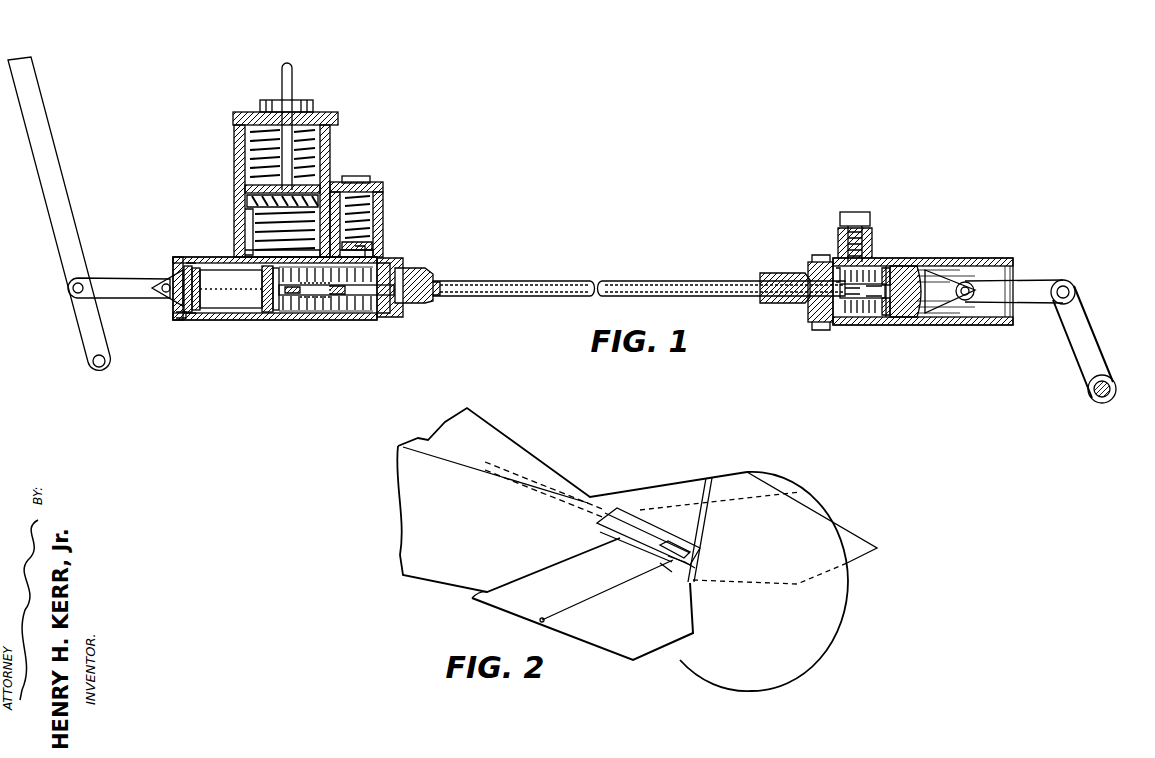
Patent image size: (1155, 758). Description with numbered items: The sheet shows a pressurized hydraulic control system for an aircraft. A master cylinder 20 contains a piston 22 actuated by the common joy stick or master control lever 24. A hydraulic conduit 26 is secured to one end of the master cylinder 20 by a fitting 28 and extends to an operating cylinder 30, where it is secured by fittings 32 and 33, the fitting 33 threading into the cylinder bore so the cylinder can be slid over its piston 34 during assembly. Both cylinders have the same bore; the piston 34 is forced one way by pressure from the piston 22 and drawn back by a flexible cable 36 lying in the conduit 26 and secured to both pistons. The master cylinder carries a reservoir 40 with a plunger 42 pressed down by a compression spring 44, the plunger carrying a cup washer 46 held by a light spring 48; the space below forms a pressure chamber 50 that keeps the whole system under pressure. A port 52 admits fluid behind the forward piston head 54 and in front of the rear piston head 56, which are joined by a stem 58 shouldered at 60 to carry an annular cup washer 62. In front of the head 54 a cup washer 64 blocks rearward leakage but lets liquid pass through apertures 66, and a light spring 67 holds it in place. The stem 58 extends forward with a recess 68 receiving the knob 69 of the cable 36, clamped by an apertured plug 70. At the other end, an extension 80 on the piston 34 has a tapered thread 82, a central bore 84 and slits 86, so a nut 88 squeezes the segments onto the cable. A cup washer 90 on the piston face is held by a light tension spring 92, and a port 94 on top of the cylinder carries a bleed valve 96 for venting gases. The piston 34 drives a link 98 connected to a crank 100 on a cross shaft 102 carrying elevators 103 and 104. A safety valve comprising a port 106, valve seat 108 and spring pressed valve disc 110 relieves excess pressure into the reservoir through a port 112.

In FIG. 1, the master cylinder 20 is at (370, 318).
In FIG. 1, the piston 22 is at (230, 322).
In FIG. 1, the master control lever 24 is at (58, 226).
In FIG. 1, the hydraulic conduit 26 is at (630, 283).
In FIG. 2, the hydraulic conduit 26 is at (547, 497).
In FIG. 1, the fitting 28 is at (410, 270).
In FIG. 1, the operating cylinder 30 is at (945, 258).
In FIG. 2, the operating cylinder 30 is at (600, 535).
In FIG. 1, the fitting 32 is at (808, 273).
In FIG. 1, the fitting 33 is at (817, 318).
In FIG. 1, the piston 34 is at (907, 268).
In FIG. 1, the flexible cable 36 is at (560, 283).
In FIG. 1, the reservoir 40 is at (247, 178).
In FIG. 1, the plunger 42 is at (243, 195).
In FIG. 1, the compression spring 44 is at (245, 160).
In FIG. 1, the cup washer 46 is at (245, 213).
In FIG. 1, the light spring 48 is at (246, 240).
In FIG. 1, the pressure chamber 50 is at (250, 228).
In FIG. 1, the port 52 is at (246, 250).
In FIG. 1, the forward piston head 54 is at (270, 320).
In FIG. 1, the rear piston head 56 is at (182, 322).
In FIG. 1, the stem 58 is at (228, 292).
In FIG. 1, the shoulder 60 is at (210, 294).
In FIG. 1, the annular cup washer 62 is at (195, 320).
In FIG. 1, the cup washer 64 is at (277, 318).
In FIG. 1, the apertures 66 is at (257, 320).
In FIG. 1, the light spring 67 is at (363, 318).
In FIG. 1, the recess 68 is at (290, 300).
In FIG. 1, the knob 69 is at (312, 300).
In FIG. 1, the apertured plug 70 is at (335, 308).
In FIG. 1, the extension 80 is at (872, 317).
In FIG. 1, the tapered thread 82 is at (855, 315).
In FIG. 1, the central bore 84 is at (833, 330).
In FIG. 1, the slits 86 is at (880, 265).
In FIG. 1, the nut 88 is at (830, 318).
In FIG. 1, the cup washer 90 is at (888, 317).
In FIG. 1, the light tension spring 92 is at (823, 260).
In FIG. 1, the port 94 is at (872, 250).
In FIG. 1, the bleed valve 96 is at (855, 212).
In FIG. 1, the link 98 is at (1028, 292).
In FIG. 2, the link 98 is at (673, 547).
In FIG. 1, the crank 100 is at (1090, 345).
In FIG. 2, the crank 100 is at (710, 565).
In FIG. 1, the cross shaft 102 is at (1105, 397).
In FIG. 2, the cross shaft 102 is at (668, 570).
In FIG. 2, the elevator 103 is at (641, 640).
In FIG. 2, the elevator 104 is at (853, 543).
In FIG. 1, the port 106 is at (390, 258).
In FIG. 1, the valve seat 108 is at (372, 240).
In FIG. 1, the spring pressed valve disc 110 is at (380, 250).
In FIG. 1, the port 112 is at (342, 250).